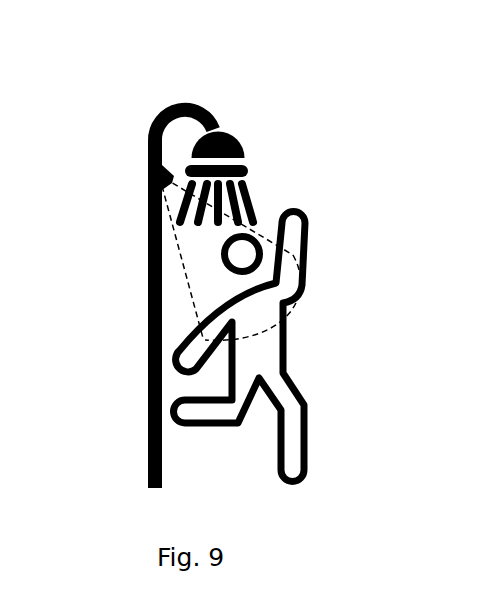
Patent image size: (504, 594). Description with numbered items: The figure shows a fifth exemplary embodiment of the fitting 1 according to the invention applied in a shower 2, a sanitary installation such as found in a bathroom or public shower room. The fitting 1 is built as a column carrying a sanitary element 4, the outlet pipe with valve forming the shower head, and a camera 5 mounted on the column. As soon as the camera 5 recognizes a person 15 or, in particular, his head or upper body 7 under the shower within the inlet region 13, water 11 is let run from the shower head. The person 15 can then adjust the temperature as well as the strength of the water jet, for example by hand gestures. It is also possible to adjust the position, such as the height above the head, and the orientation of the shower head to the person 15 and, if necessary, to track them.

The fitting 1 is at (215, 92).
The shower 2 is at (123, 116).
The sanitary element 4 is at (246, 139).
The camera 5 is at (148, 179).
The head or upper body 7 is at (313, 242).
The water 11 is at (257, 192).
The inlet region 13 is at (177, 268).
The person 15 is at (300, 342).